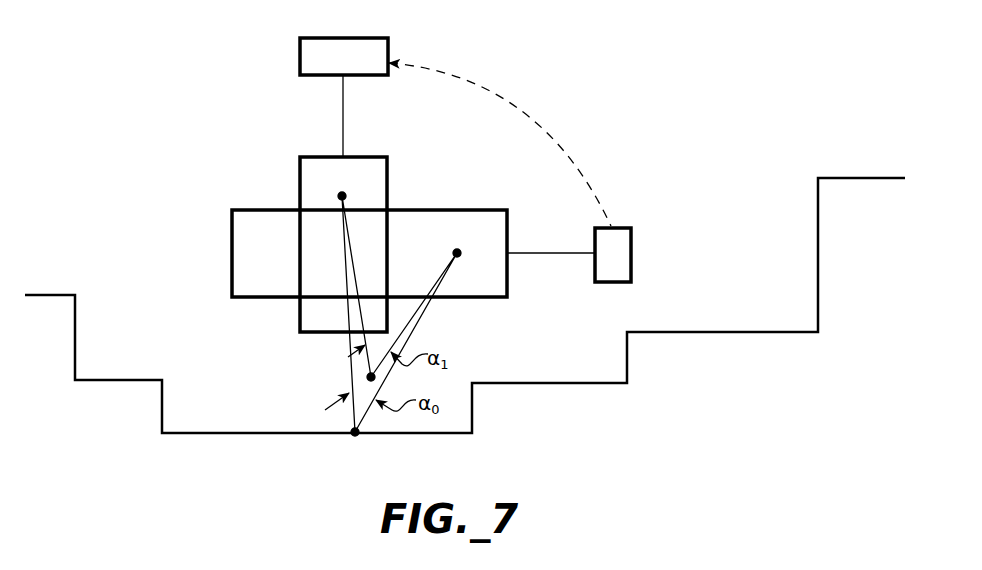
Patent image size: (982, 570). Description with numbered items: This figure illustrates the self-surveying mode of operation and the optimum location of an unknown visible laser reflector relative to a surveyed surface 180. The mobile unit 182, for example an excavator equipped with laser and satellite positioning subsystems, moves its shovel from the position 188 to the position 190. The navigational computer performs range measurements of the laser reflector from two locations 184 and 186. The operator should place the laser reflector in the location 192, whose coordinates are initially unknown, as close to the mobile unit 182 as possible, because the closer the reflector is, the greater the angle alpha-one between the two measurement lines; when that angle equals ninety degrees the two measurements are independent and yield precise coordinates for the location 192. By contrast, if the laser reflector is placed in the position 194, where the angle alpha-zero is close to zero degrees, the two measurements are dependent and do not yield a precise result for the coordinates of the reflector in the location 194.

The stepped target surface 180 is at (187, 472).
The mobile unit 182 is at (300, 313).
The first measurement location 184 is at (342, 196).
The second measurement location 186 is at (457, 253).
The first shovel position 188 is at (631, 258).
The second shovel position 190 is at (300, 58).
The optimum laser reflector location 192 is at (371, 377).
The poor laser reflector location 194 is at (355, 432).